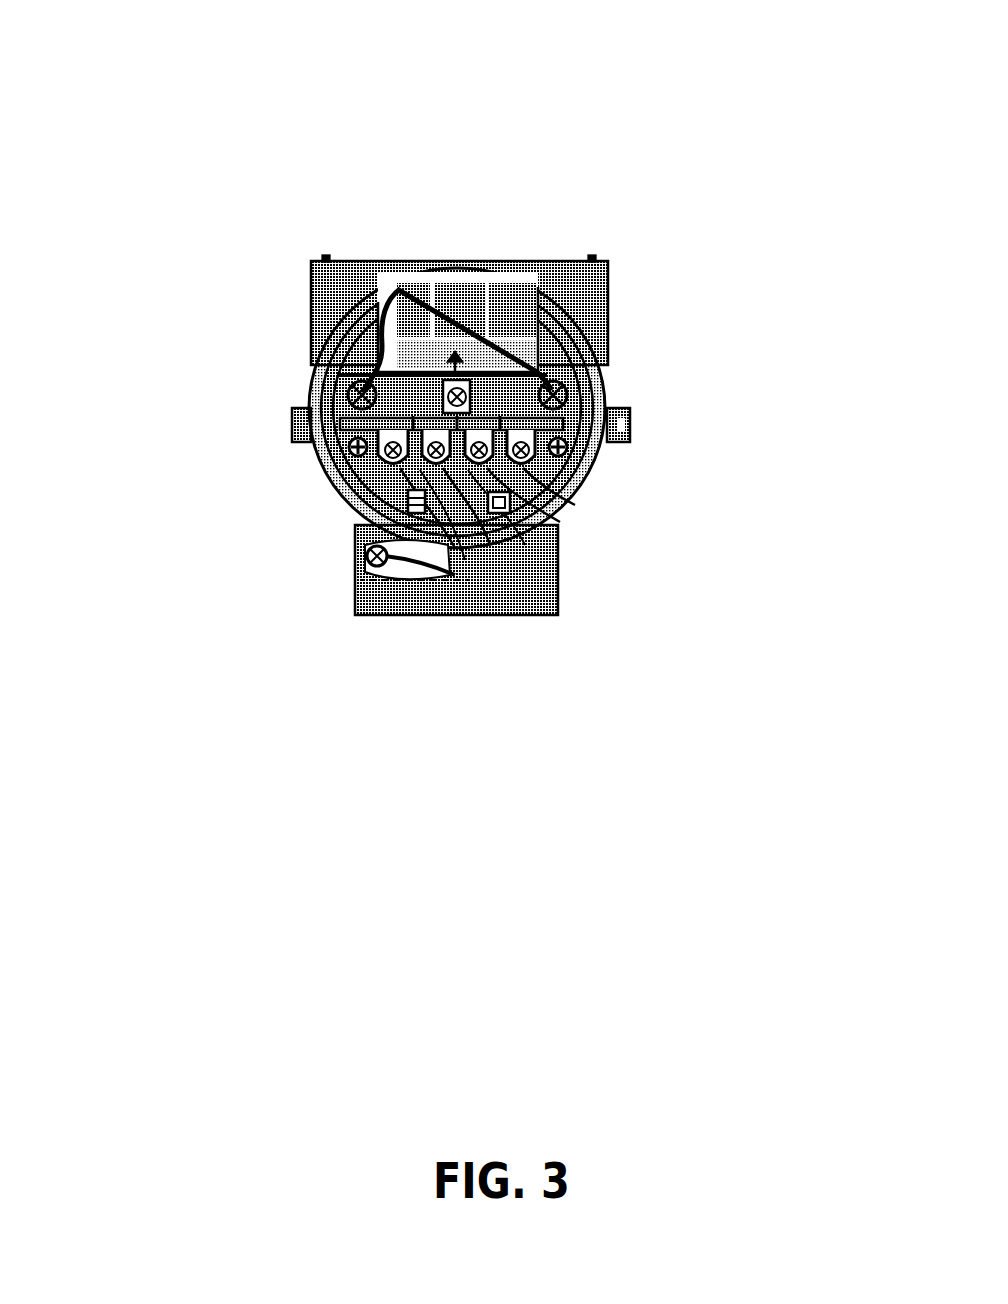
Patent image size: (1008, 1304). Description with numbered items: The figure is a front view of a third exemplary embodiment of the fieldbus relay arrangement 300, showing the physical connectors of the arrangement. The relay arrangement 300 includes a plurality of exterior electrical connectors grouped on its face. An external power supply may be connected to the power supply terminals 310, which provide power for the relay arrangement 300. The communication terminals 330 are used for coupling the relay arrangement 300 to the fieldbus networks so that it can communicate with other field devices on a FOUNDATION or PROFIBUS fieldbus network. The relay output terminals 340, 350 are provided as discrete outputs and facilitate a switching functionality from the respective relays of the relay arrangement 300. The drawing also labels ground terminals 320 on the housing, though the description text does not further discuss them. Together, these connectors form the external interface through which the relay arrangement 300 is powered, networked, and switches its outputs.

The fieldbus relay arrangement 300 is at (490, 62).
The power supply terminals 310 is at (397, 293).
The ground terminals 320 is at (630, 416).
The communication terminals 330 is at (352, 540).
The relay output terminals 340 is at (539, 673).
The relay output terminals 350 is at (670, 592).